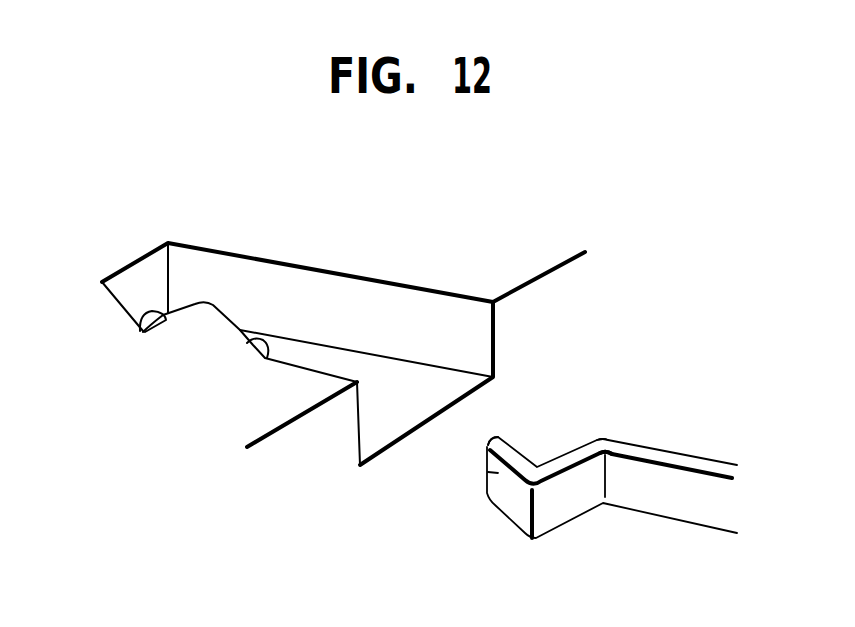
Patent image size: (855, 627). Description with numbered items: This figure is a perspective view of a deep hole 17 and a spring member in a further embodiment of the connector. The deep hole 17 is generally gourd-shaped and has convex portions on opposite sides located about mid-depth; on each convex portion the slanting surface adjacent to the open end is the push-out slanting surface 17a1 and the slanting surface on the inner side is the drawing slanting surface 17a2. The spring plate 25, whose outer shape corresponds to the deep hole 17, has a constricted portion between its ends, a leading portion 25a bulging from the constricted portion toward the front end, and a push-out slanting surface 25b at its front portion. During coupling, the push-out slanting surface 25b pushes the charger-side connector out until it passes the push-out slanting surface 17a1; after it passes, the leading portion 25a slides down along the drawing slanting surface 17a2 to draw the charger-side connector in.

The deep hole 17 is at (458, 328).
The push-out slanting surface 17a1 is at (263, 360).
The drawing slanting surface 17a2 is at (148, 308).
The spring plate 25 is at (712, 448).
The leading portion 25a is at (570, 488).
The push-out slanting surface 25b is at (485, 465).